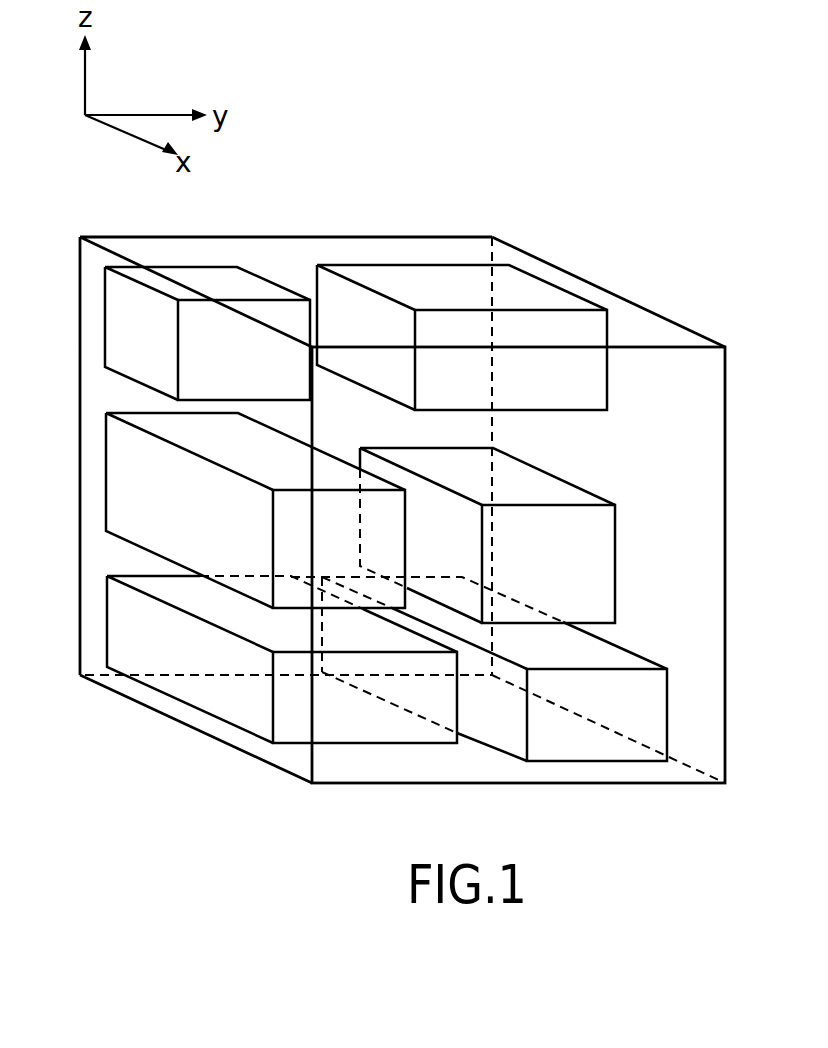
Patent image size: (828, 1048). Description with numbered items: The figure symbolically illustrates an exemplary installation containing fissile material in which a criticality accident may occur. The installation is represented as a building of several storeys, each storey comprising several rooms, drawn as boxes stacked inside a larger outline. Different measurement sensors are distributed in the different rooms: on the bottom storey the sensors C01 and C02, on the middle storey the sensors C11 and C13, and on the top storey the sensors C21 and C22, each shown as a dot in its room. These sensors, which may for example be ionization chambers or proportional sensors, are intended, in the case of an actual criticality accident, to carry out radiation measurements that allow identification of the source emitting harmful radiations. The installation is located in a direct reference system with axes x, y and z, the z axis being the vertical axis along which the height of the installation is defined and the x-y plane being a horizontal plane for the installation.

The measurement sensor C21 is at (166, 332).
The measurement sensor C22 is at (491, 337).
The measurement sensor C11 is at (255, 510).
The measurement sensor C13 is at (518, 535).
The measurement sensor C01 is at (282, 659).
The measurement sensor C02 is at (479, 669).